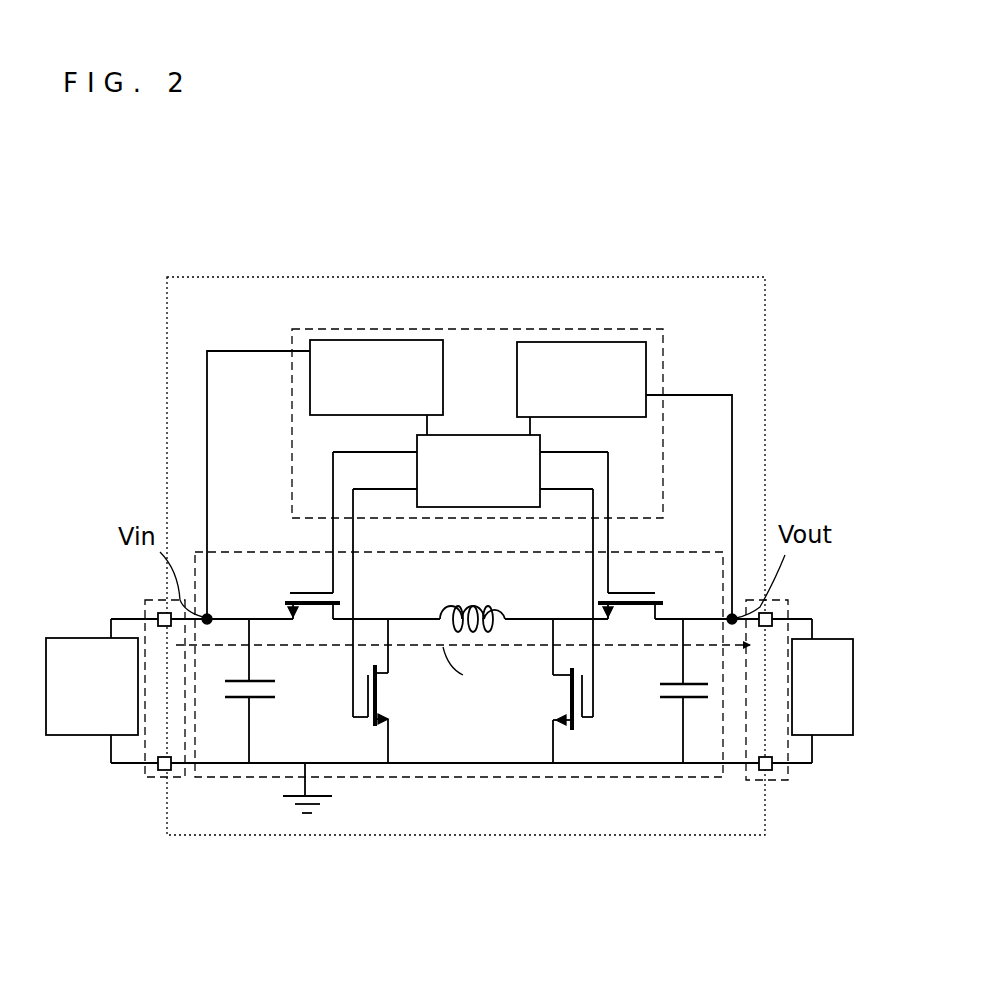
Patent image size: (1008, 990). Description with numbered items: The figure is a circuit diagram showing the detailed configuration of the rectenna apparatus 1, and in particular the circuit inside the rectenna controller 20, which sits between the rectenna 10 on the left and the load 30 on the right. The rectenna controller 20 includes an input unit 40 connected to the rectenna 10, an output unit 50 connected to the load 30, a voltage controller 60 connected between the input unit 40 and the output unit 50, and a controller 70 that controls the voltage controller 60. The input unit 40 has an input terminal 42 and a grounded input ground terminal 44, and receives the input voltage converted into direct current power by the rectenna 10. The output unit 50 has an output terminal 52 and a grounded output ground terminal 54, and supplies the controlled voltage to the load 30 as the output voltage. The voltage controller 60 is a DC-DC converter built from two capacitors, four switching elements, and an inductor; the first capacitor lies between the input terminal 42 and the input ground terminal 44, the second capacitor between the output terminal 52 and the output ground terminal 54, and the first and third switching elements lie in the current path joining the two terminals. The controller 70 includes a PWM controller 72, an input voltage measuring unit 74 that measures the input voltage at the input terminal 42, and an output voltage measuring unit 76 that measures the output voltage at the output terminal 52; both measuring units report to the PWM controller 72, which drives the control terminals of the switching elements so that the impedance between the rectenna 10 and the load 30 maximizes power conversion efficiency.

The rectenna apparatus 1 is at (852, 220).
The rectenna 10 is at (78, 638).
The rectenna controller 20 is at (767, 335).
The load 30 is at (832, 639).
The input unit 40 is at (145, 775).
The input terminal 42 is at (157, 610).
The input ground terminal 44 is at (168, 770).
The output unit 50 is at (753, 780).
The output terminal 52 is at (775, 612).
The output ground terminal 54 is at (772, 768).
The voltage controller 60 is at (657, 552).
The controller 70 is at (664, 347).
The PWM controller 72 is at (462, 433).
The input voltage measuring unit 74 is at (380, 340).
The output voltage measuring unit 76 is at (557, 342).